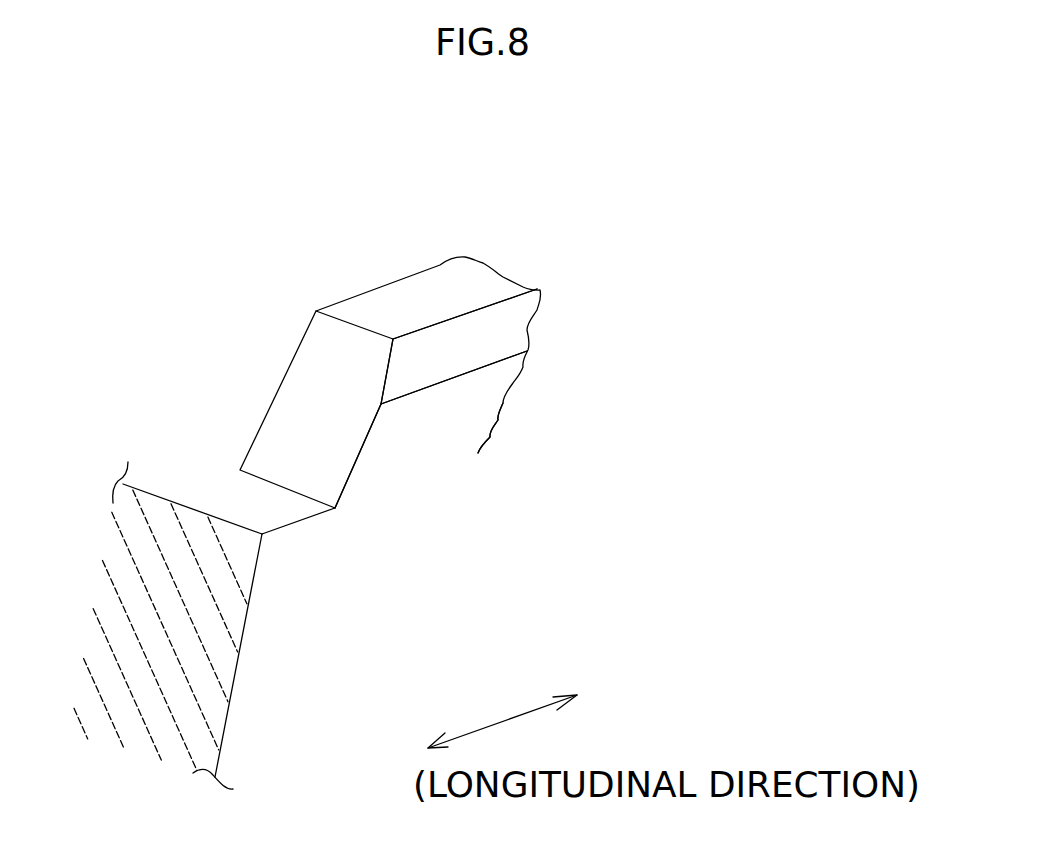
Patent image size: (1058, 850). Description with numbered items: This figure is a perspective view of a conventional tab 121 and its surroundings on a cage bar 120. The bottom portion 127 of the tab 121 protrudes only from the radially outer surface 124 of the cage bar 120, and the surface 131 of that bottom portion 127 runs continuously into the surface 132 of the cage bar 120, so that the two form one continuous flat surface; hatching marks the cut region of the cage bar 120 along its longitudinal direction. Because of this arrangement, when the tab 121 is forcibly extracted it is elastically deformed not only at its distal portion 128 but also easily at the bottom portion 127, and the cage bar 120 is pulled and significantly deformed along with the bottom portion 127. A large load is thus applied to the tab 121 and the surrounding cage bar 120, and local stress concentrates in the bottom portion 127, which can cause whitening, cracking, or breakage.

The cage bar 120 is at (225, 722).
The tab 121 is at (417, 276).
The radially outer surface 124 is at (202, 493).
The bottom portion 127 is at (442, 428).
The distal portion 128 is at (468, 392).
The surface of the bottom portion 131 is at (387, 452).
The surface of the cage bar 132 is at (357, 535).